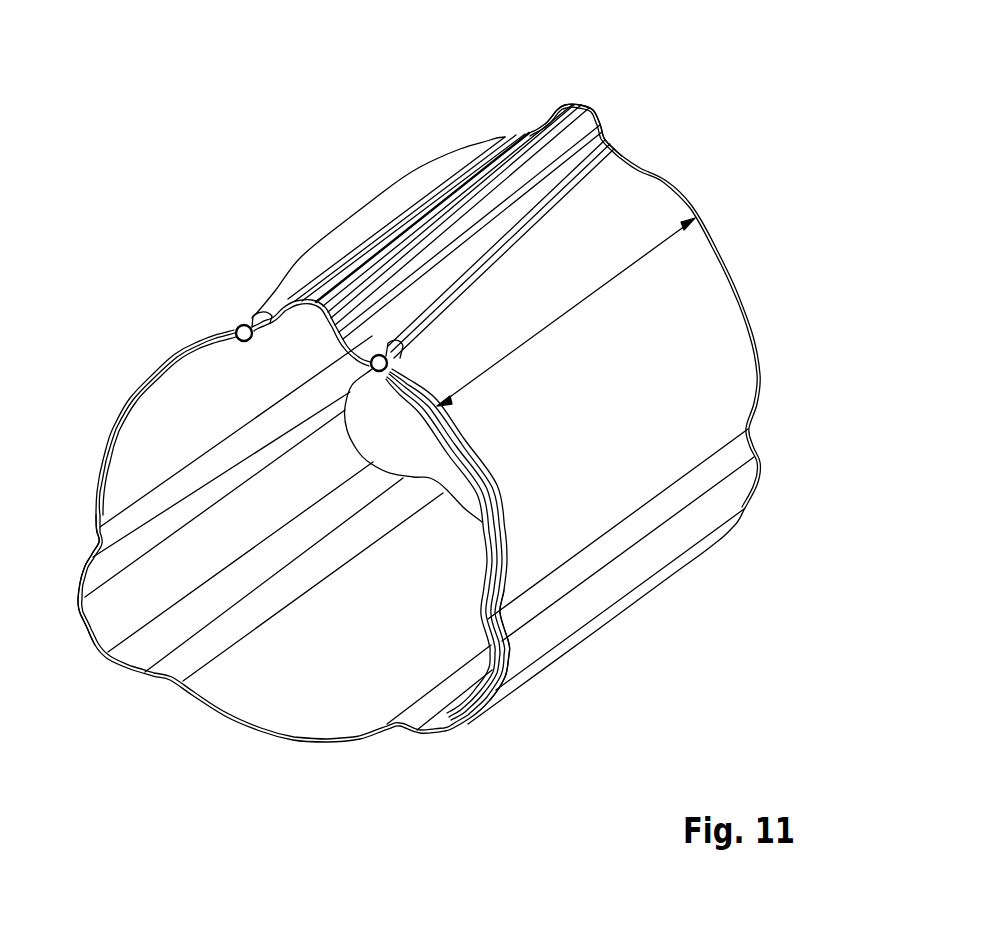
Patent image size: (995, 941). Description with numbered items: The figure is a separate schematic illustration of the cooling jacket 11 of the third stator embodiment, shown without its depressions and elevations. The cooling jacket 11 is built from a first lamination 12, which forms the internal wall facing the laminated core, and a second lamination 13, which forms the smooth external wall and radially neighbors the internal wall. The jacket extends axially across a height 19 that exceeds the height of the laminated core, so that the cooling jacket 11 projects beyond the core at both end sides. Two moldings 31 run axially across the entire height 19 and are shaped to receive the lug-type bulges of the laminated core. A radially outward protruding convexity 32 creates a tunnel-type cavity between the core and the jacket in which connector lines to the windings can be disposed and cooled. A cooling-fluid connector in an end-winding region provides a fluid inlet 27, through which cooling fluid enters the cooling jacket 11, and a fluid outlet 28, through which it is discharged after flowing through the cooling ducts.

The cooling jacket 11 is at (283, 232).
The first lamination 12 is at (315, 716).
The second lamination 13 is at (706, 273).
The height 19 is at (578, 307).
The fluid inlet 27 is at (250, 320).
The fluid outlet 28 is at (385, 345).
The moldings 31 is at (93, 638).
The convexity 32 is at (590, 107).